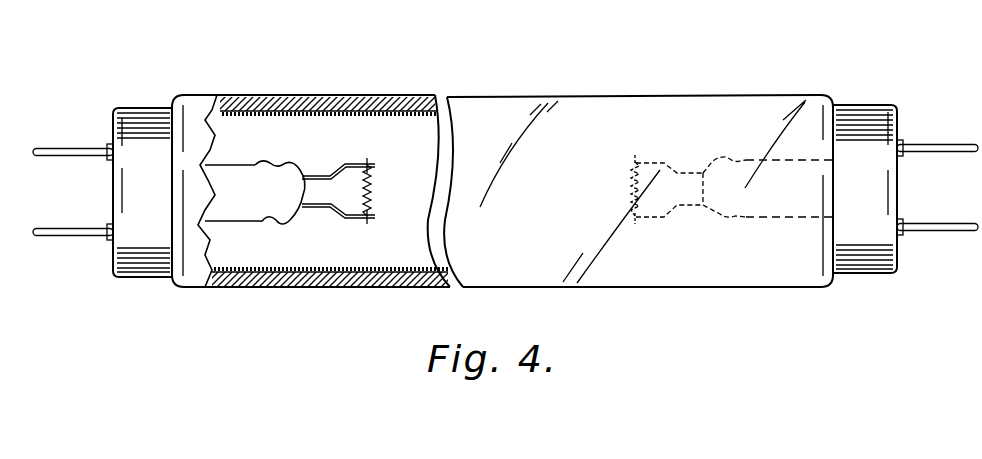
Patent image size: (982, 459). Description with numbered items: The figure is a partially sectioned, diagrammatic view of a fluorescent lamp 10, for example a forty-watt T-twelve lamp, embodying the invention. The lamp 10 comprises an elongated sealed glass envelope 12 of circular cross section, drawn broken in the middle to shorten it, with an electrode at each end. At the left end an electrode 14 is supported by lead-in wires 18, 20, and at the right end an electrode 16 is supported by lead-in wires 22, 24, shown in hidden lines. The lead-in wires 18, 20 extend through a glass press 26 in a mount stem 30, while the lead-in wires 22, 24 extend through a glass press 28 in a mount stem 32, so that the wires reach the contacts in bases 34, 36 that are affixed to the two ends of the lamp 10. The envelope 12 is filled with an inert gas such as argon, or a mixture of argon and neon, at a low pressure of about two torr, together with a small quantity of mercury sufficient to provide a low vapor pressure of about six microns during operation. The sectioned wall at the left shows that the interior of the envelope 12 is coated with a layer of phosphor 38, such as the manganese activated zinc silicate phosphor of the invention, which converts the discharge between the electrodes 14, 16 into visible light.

The fluorescent lamp 10 is at (704, 86).
The glass envelope 12 is at (543, 97).
The electrode 14 is at (372, 184).
The electrode 16 is at (630, 183).
The lead-in wire 18 is at (340, 170).
The lead-in wire 20 is at (328, 212).
The lead-in wire 22 is at (666, 167).
The lead-in wire 24 is at (665, 212).
The glass press 26 is at (280, 172).
The glass press 28 is at (725, 212).
The mount stem 30 is at (243, 214).
The mount stem 32 is at (800, 222).
The base 34 is at (113, 190).
The base 36 is at (900, 190).
The layer of phosphor 38 is at (335, 112).